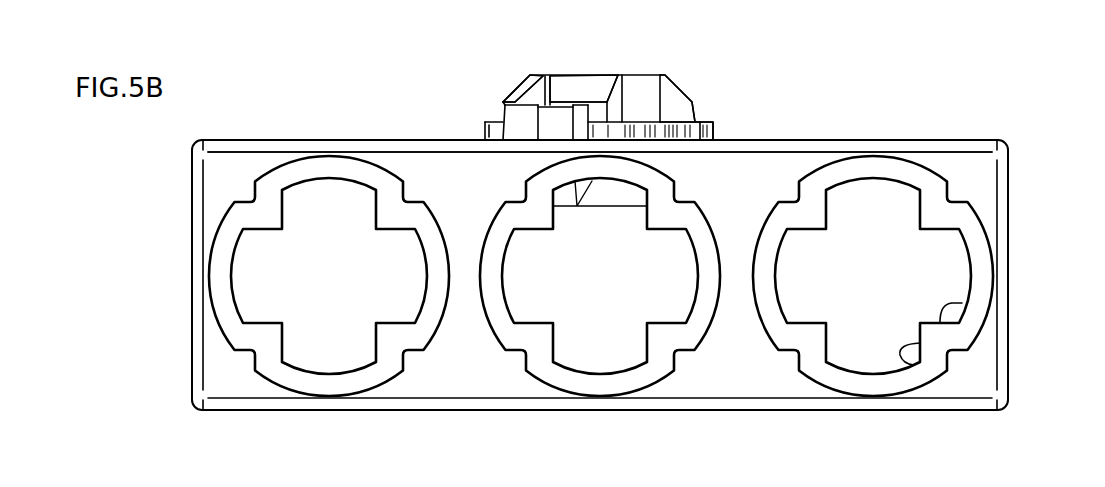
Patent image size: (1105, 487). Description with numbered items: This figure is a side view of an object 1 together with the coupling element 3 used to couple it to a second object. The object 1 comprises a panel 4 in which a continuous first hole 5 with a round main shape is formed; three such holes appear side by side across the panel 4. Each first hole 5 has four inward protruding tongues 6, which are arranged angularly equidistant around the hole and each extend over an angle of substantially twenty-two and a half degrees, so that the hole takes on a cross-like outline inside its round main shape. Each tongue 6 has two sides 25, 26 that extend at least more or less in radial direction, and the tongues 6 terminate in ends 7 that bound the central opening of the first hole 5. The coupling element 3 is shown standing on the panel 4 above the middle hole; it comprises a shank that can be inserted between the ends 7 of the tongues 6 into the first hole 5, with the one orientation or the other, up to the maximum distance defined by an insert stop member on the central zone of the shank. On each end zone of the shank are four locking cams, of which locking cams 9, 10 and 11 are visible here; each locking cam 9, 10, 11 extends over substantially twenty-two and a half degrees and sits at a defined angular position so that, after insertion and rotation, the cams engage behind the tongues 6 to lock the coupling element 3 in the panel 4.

The object 1 is at (935, 131).
The coupling element 3 is at (695, 80).
The panel 4 is at (427, 167).
The first hole 5 is at (340, 245).
The tongue 6 is at (265, 207).
The end of tongue 7 is at (920, 228).
The locking cam 9 is at (523, 85).
The locking cam 10 is at (593, 83).
The locking cam 11 is at (681, 83).
The side of tongue 25 is at (913, 365).
The side of tongue 26 is at (960, 303).